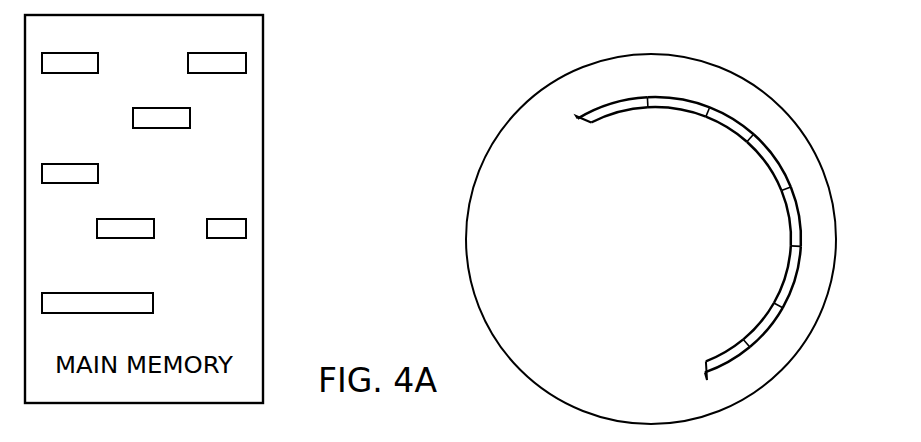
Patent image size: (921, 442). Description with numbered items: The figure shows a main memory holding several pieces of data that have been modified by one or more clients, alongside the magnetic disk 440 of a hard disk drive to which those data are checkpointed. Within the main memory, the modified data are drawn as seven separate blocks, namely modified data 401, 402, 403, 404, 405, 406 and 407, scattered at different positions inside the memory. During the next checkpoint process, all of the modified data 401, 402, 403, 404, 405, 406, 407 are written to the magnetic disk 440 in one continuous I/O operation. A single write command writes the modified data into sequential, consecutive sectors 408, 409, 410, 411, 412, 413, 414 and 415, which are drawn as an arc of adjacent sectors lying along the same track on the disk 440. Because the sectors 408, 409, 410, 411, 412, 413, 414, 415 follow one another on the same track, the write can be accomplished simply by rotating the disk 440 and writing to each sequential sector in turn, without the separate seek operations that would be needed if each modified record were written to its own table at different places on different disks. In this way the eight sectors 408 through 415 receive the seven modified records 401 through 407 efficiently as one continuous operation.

The modified data 401 is at (98, 65).
The modified data 402 is at (197, 52).
The modified data 403 is at (190, 122).
The modified data 404 is at (98, 175).
The modified data 405 is at (117, 219).
The modified data 406 is at (233, 219).
The modified data 407 is at (153, 299).
The sector 408 is at (597, 110).
The sector 409 is at (672, 100).
The sector 410 is at (735, 120).
The sector 411 is at (777, 157).
The sector 412 is at (798, 212).
The sector 413 is at (795, 272).
The sector 414 is at (768, 333).
The sector 415 is at (712, 366).
The magnetic disk 440 is at (672, 232).